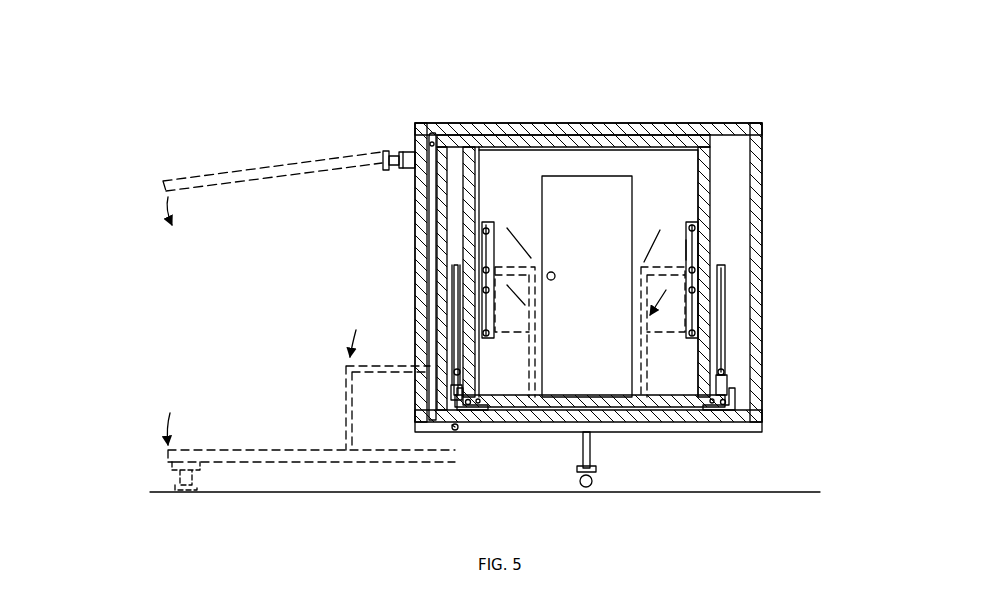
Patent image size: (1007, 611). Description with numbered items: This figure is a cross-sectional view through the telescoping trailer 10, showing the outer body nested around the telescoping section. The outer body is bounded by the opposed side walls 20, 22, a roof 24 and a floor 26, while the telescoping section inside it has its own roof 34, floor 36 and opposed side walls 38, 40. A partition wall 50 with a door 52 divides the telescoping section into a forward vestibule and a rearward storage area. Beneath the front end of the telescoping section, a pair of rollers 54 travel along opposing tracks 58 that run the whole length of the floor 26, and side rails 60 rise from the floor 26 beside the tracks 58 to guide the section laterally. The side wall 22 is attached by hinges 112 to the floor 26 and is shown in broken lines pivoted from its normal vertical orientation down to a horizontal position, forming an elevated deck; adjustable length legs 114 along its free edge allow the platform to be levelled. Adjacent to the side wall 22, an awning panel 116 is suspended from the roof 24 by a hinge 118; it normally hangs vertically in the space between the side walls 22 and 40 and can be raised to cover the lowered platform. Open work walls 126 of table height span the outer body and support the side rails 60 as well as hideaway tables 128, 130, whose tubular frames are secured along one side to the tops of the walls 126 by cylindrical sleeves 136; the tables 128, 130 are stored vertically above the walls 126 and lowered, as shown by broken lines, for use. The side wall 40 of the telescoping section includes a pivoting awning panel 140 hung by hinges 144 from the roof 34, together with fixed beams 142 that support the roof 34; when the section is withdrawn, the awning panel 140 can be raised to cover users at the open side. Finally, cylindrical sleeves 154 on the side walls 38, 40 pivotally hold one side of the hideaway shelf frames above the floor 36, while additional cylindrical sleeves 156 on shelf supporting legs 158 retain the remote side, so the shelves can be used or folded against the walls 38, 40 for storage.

The telescoping trailer 10 is at (683, 68).
The side wall 20 is at (762, 168).
The side wall 22 is at (415, 203).
The roof 24 is at (622, 125).
The floor 26 is at (622, 433).
The roof 34 is at (680, 135).
The floor 36 is at (578, 395).
The side wall 38 is at (710, 196).
The side wall 40 is at (487, 160).
The partition wall 50 is at (675, 185).
The door 52 is at (587, 239).
The rollers 54 is at (495, 415).
The tracks 58 is at (470, 420).
The side rails 60 is at (485, 469).
The hinges 112 is at (447, 432).
The adjustable length legs 114 is at (403, 151).
The awning panel 116 is at (437, 235).
The hinge 118 is at (440, 137).
The open work walls 126 is at (452, 396).
The hideaway table 128 is at (723, 303).
The hideaway table 130 is at (454, 272).
The cylindrical sleeves 136 is at (460, 371).
The awning panel 140 is at (463, 297).
The fixed beams 142 is at (480, 187).
The hinges 144 is at (470, 142).
The cylindrical sleeves 154 is at (696, 270).
The cylindrical sleeves 156 is at (690, 226).
The shelf supporting legs 158 is at (688, 250).